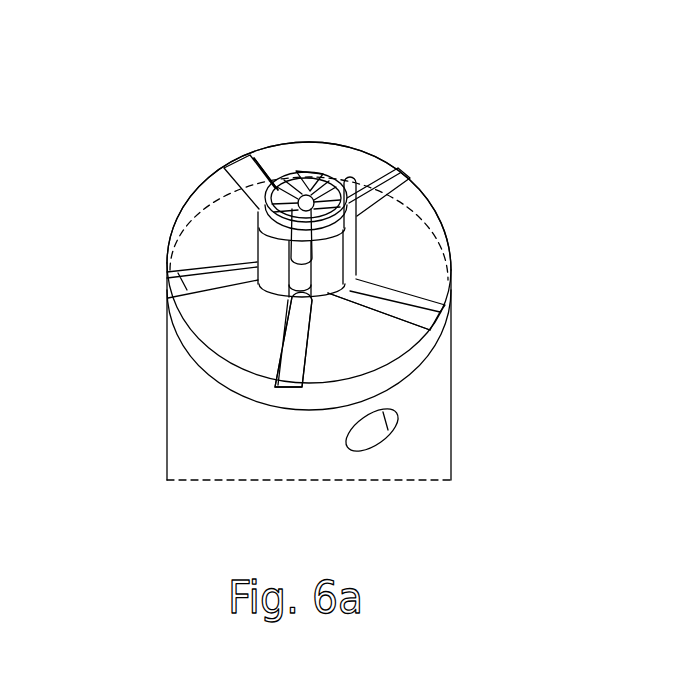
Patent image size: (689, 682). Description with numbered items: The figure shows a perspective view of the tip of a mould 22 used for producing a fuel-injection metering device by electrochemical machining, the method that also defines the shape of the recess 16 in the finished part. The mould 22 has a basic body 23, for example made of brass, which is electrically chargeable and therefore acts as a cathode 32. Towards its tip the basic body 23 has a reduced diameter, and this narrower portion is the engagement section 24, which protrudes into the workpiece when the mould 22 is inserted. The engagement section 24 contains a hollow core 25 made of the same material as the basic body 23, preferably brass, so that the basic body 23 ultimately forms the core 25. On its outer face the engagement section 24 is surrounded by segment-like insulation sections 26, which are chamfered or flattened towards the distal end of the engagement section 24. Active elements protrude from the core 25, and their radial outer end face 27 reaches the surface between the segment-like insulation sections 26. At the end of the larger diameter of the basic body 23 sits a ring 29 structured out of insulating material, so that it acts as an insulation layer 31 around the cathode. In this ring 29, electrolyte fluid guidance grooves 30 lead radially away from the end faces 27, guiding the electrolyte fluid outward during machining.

The mould 22 is at (363, 95).
The recess 16 is at (348, 196).
The basic body 23 is at (322, 311).
The cathode 32 is at (242, 311).
The engagement section 24 is at (366, 247).
The hollow core 25 is at (272, 186).
The segment-like insulation sections 26 is at (273, 241).
The radial outer end face 27 is at (283, 341).
The ring 29 is at (242, 311).
The insulation layer 31 is at (222, 374).
The electrolyte fluid guidance grooves 30 is at (247, 178).